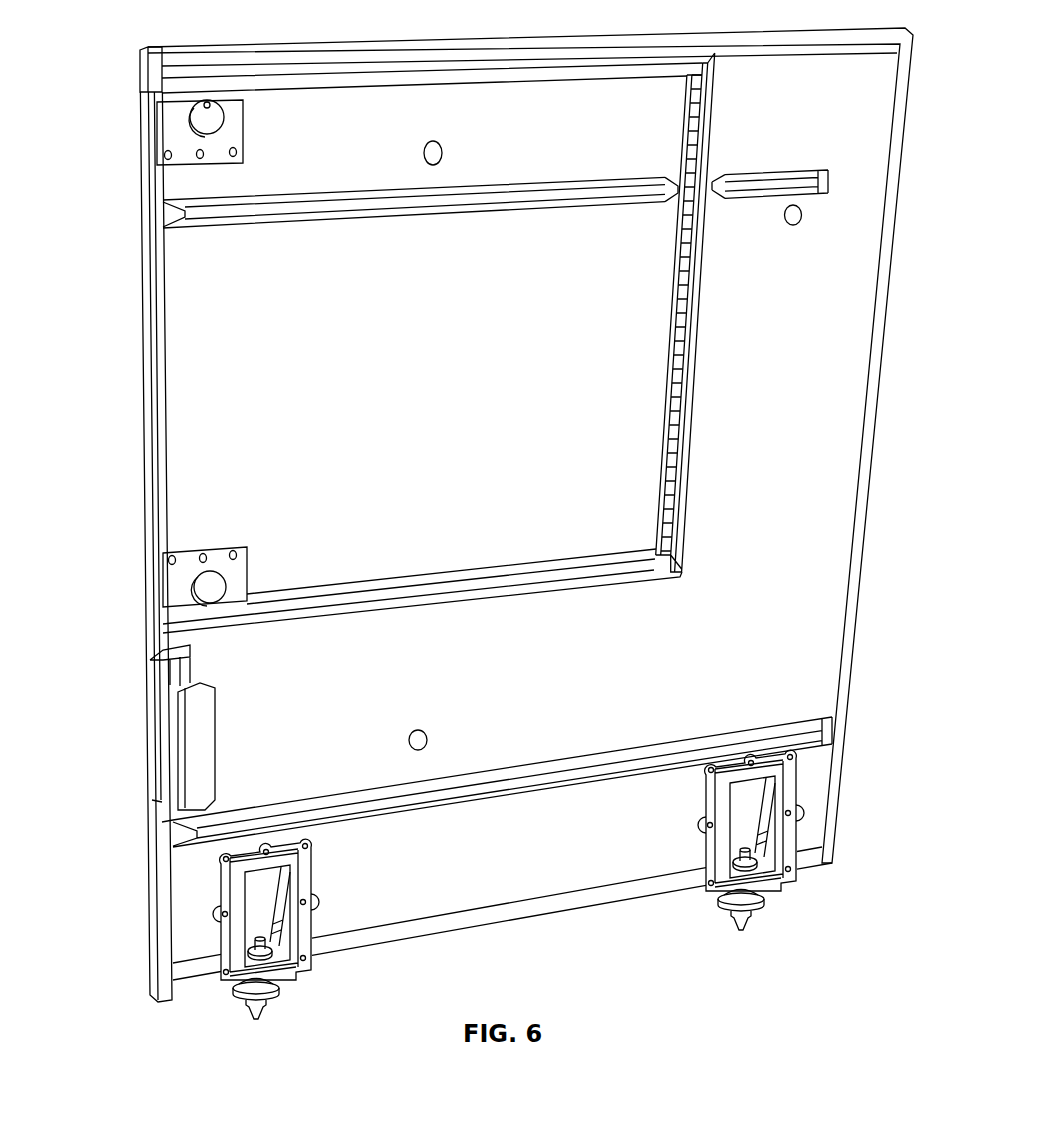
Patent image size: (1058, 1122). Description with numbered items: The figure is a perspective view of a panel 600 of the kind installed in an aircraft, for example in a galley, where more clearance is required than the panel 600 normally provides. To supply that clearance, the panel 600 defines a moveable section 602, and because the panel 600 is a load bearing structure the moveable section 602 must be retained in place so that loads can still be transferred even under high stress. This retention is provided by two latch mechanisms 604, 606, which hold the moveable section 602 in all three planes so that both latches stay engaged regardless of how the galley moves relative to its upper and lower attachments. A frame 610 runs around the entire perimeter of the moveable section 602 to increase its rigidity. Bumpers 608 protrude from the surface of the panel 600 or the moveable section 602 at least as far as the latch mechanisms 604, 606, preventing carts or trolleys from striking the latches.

The panel 600 is at (857, 269).
The moveable section 602 is at (207, 352).
The latch mechanism 604 is at (172, 130).
The latch mechanism 606 is at (228, 577).
The bumper 608 is at (760, 185).
The frame 610 is at (163, 438).